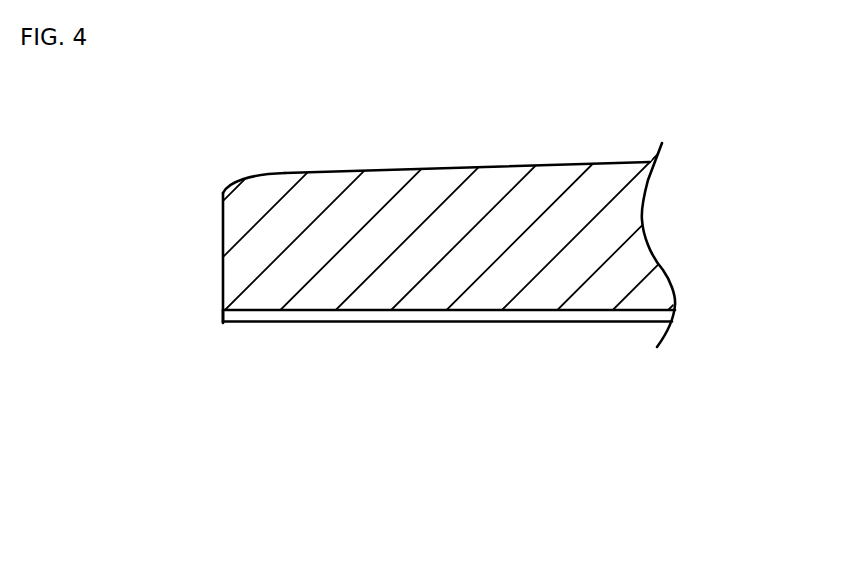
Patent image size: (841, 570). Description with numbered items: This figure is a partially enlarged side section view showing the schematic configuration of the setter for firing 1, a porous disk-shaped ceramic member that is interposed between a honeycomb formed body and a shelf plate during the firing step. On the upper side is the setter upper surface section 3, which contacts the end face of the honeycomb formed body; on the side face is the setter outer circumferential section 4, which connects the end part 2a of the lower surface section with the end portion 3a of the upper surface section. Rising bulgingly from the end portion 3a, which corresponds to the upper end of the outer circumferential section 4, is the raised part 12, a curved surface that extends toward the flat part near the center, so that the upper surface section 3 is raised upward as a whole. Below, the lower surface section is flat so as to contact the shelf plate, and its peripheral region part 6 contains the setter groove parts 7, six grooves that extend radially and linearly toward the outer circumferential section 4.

The setter for firing 1 is at (389, 133).
The raised part 12 is at (300, 172).
The setter upper surface section 3 is at (471, 225).
The end portion of the setter upper surface section 3a is at (223, 192).
The setter outer circumferential section 4 is at (222, 253).
The end part of the setter lower surface section 2a is at (222, 323).
The peripheral region part 6 is at (290, 323).
The setter groove part 7 is at (413, 315).